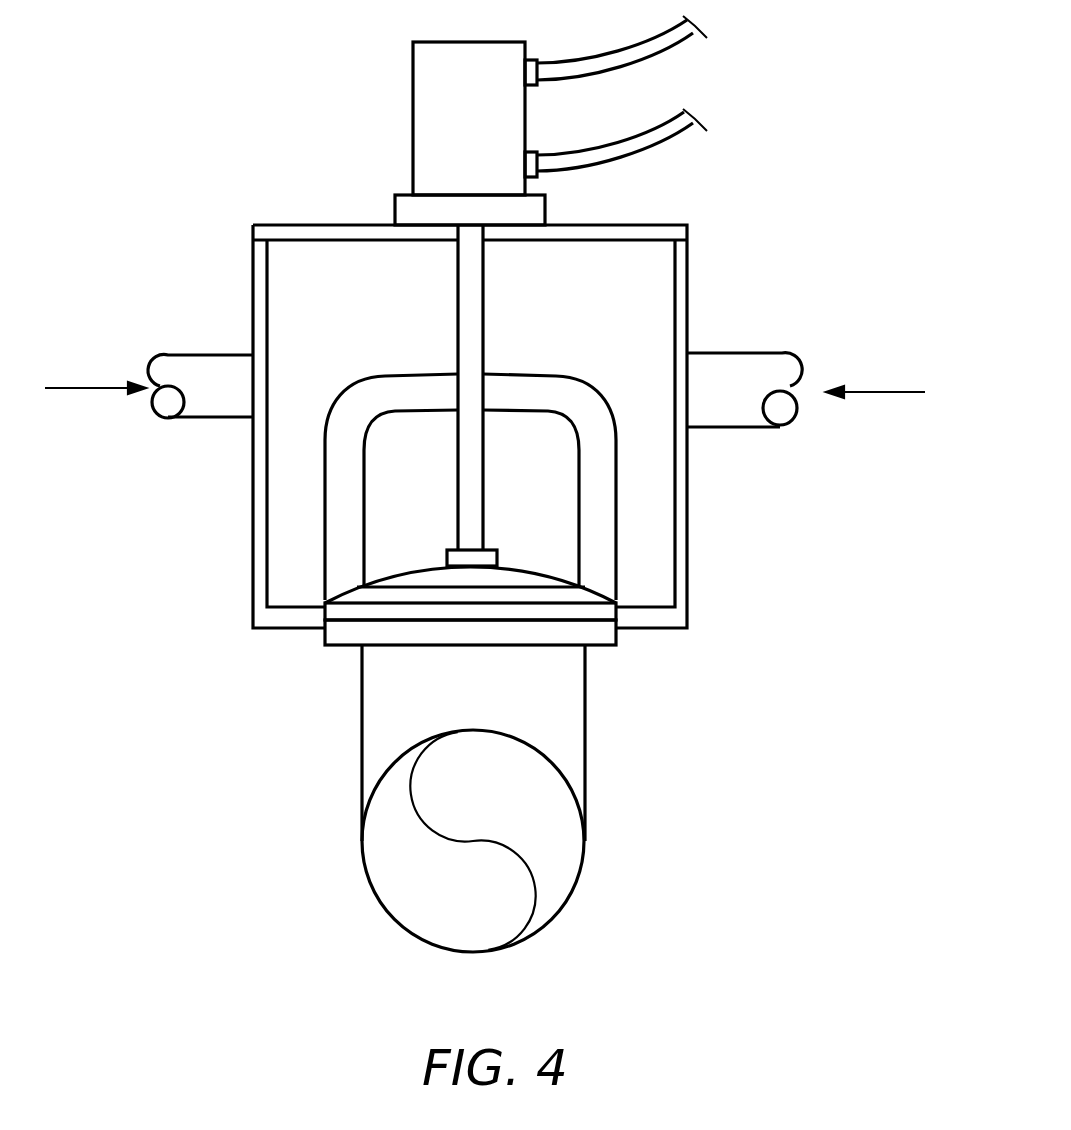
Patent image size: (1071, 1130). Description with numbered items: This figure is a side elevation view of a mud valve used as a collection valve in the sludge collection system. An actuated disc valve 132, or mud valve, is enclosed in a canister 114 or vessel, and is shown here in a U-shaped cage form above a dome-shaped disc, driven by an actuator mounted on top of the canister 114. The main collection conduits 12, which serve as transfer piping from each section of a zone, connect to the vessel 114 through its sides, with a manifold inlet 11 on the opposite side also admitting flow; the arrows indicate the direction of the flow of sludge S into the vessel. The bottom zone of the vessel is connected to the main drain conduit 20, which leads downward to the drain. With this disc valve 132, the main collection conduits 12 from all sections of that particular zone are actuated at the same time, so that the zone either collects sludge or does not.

The manifold inlet 11 is at (687, 350).
The main collection conduit 12 is at (223, 355).
The canister 114 is at (252, 535).
The actuated disc valve 132 is at (618, 532).
The main drain conduit 20 is at (588, 830).
The sludge S is at (103, 388).